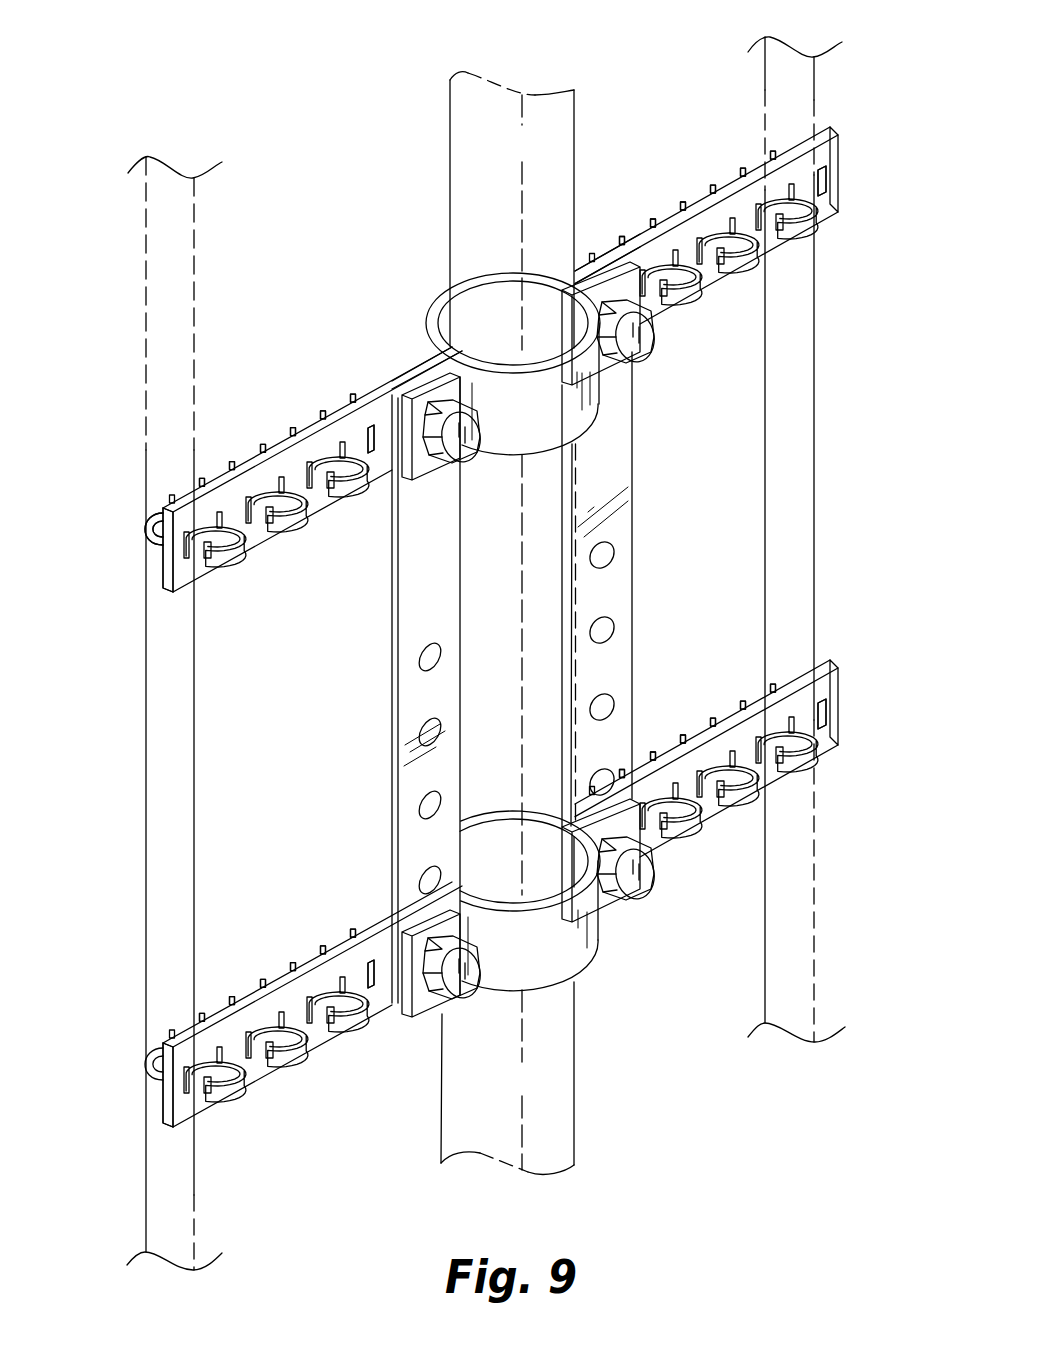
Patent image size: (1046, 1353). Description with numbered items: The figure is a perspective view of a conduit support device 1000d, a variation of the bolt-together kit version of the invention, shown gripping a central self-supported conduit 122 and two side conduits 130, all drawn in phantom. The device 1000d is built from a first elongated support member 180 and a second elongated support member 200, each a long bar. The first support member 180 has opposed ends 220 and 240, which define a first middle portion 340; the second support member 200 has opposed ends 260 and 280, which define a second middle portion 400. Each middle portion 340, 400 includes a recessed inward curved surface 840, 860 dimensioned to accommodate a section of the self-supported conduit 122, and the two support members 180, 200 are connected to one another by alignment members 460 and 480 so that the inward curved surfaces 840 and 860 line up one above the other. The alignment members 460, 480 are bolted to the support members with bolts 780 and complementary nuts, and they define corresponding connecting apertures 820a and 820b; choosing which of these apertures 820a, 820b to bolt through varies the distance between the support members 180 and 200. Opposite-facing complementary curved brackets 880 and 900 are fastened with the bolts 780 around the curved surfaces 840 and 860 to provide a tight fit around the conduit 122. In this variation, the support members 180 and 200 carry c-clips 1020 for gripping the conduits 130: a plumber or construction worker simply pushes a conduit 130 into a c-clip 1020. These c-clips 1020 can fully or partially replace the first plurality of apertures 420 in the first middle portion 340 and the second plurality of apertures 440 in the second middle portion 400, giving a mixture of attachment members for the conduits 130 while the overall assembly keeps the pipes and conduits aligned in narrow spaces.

The conduit support device 1000d is at (151, 90).
The self-supported conduit 122 is at (450, 142).
The conduit 130 is at (813, 92).
The first elongated support member 180 is at (352, 395).
The second elongated support member 200 is at (252, 990).
The opposed end 220 is at (185, 495).
The opposed end 240 is at (840, 168).
The opposed end 260 is at (197, 1125).
The opposed end 280 is at (840, 700).
The first middle portion 340 is at (626, 242).
The second middle portion 400 is at (738, 722).
The first plurality of apertures 420 is at (287, 487).
The second plurality of apertures 440 is at (815, 698).
The alignment member 460 is at (370, 690).
The alignment member 480 is at (635, 589).
The bolt 780 is at (648, 884).
The connecting apertures 820a is at (422, 737).
The connecting apertures 820b is at (606, 556).
The recessed inward curved surface 840 is at (492, 302).
The recessed inward curved surface 860 is at (498, 815).
The curved bracket 880 is at (500, 442).
The curved bracket 900 is at (557, 960).
The c-clips 1020 is at (818, 228).